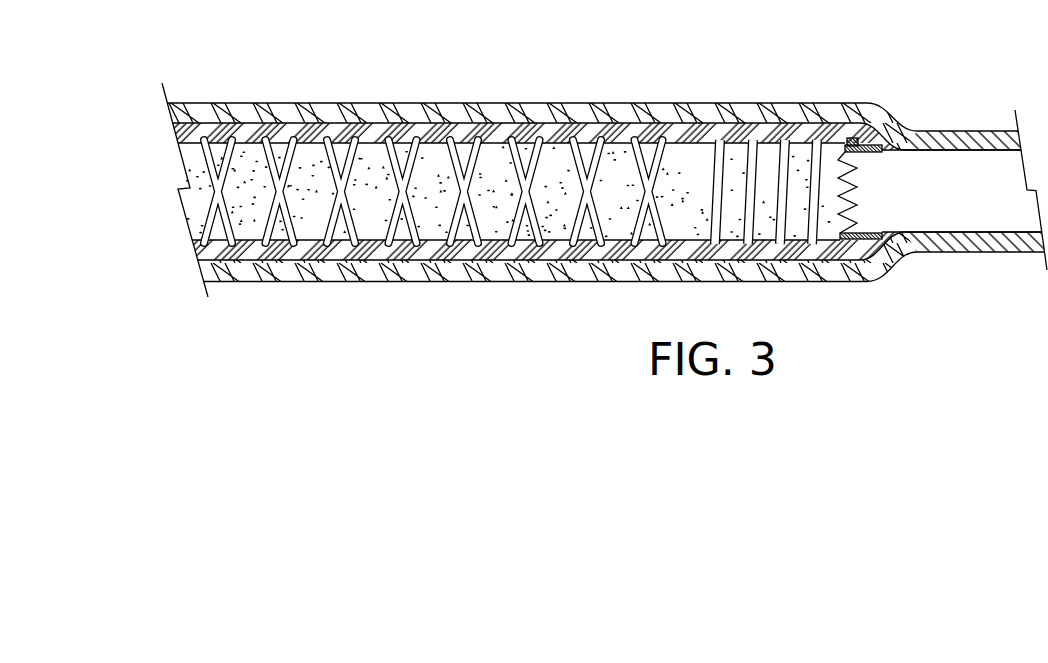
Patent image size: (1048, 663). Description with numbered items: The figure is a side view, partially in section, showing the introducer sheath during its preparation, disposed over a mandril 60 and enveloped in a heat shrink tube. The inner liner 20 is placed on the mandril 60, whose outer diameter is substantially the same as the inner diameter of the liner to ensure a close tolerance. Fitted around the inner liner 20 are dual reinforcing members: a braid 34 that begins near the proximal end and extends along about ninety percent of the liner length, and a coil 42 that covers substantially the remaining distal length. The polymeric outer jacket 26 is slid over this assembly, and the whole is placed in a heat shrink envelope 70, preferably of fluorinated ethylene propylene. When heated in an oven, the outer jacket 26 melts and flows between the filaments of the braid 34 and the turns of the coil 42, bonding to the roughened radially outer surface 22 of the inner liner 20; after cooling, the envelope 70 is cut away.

The inner liner 20 is at (878, 242).
The radially outer surface 22 is at (372, 213).
The polymeric outer jacket 26 is at (552, 128).
The braid 34 is at (597, 243).
The coil 42 is at (783, 138).
The mandril 60 is at (965, 160).
The heat shrink envelope 70 is at (800, 107).